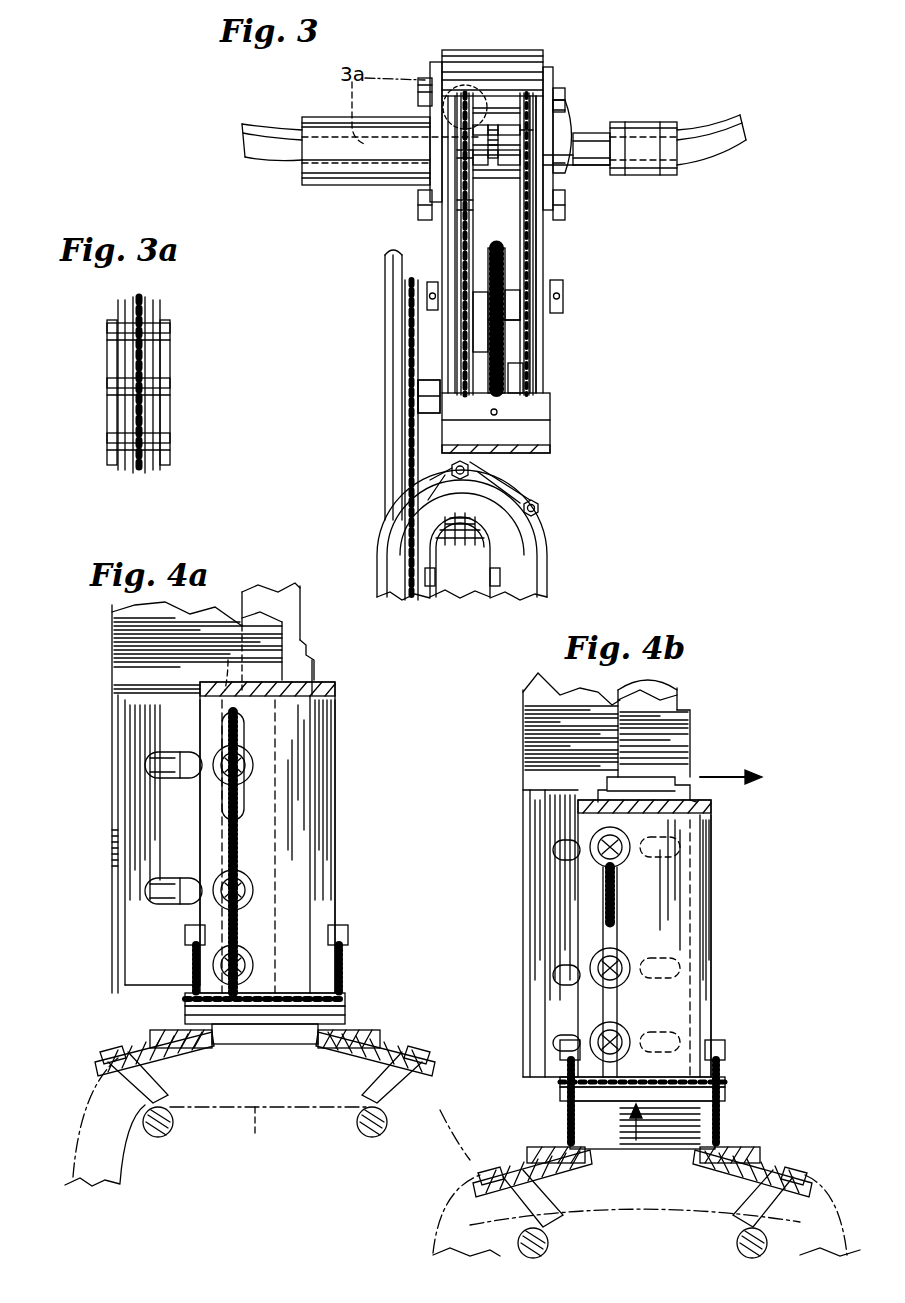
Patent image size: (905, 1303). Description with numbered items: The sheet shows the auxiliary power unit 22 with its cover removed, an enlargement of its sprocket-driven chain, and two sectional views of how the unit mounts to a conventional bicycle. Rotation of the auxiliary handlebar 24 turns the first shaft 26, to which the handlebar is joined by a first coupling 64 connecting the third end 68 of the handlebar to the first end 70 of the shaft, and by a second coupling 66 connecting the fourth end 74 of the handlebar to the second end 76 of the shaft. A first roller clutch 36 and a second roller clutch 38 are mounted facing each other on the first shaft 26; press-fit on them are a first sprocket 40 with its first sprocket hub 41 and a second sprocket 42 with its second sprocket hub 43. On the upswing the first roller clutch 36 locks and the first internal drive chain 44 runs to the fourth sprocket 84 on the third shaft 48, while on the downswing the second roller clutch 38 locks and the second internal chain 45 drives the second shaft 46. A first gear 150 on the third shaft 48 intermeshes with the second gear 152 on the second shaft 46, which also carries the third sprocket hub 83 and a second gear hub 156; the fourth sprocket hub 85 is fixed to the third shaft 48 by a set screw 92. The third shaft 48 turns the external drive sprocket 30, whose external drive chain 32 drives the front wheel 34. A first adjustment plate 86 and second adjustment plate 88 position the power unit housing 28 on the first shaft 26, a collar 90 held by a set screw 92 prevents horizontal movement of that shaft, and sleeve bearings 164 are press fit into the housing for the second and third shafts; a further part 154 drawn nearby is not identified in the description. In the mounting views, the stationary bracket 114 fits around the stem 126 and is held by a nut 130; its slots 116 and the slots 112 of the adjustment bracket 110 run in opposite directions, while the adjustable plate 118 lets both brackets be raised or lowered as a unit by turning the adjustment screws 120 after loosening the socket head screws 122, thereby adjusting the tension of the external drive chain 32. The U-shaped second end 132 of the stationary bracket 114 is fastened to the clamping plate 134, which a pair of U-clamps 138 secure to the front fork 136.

In FIG. 3, the auxiliary power unit 22 is at (572, 237).
In FIG. 3, the auxiliary handlebar 24 is at (700, 158).
In FIG. 3, the first shaft 26 is at (590, 135).
In FIG. 3, the auxiliary power unit housing 28 is at (550, 268).
In FIG. 4A, the auxiliary power unit housing 28 is at (125, 663).
In FIG. 4B, the auxiliary power unit housing 28 is at (525, 733).
In FIG. 3, the external drive sprocket 30 is at (398, 262).
In FIG. 3, the external drive chain 32 is at (410, 480).
In FIG. 3, the front wheel 34 is at (470, 585).
In FIG. 3, the first roller clutch 36 is at (440, 135).
In FIG. 3, the second roller clutch 38 is at (555, 118).
In FIG. 3, the first sprocket 40 is at (445, 165).
In FIG. 3A, the first sprocket 40 is at (140, 298).
In FIG. 3, the first sprocket hub 41 is at (468, 105).
In FIG. 3, the second sprocket 42 is at (530, 160).
In FIG. 3, the second sprocket hub 43 is at (492, 130).
In FIG. 3, the first internal drive chain 44 is at (440, 205).
In FIG. 3A, the first internal drive chain 44 is at (173, 352).
In FIG. 3, the second internal chain 45 is at (520, 130).
In FIG. 3, the second shaft 46 is at (462, 330).
In FIG. 3, the third shaft 48 is at (540, 400).
In FIG. 3, the first coupling 64 is at (325, 115).
In FIG. 3, the second coupling 66 is at (668, 125).
In FIG. 3, the third end 68 is at (340, 107).
In FIG. 3, the first end 70 is at (350, 181).
In FIG. 3, the fourth end 74 is at (678, 180).
In FIG. 3, the second end 76 is at (630, 180).
In FIG. 3, the third sprocket hub 83 is at (505, 300).
In FIG. 3, the fourth sprocket 84 is at (515, 452).
In FIG. 3, the fourth sprocket hub 85 is at (418, 395).
In FIG. 3, the first adjustment plate 86 is at (428, 78).
In FIG. 3, the second adjustment plate 88 is at (550, 72).
In FIG. 3, the collar 90 is at (585, 165).
In FIG. 3, the set screw 92 is at (560, 92).
In FIG. 4A, the adjustment bracket 110 is at (110, 745).
In FIG. 4B, the adjustment bracket 110 is at (522, 877).
In FIG. 4A, the slots 112 is at (175, 878).
In FIG. 4A, the stationary bracket 114 is at (335, 807).
In FIG. 4B, the stationary bracket 114 is at (578, 824).
In FIG. 4A, the slots 116 is at (245, 825).
In FIG. 4B, the slots 116 is at (615, 907).
In FIG. 4A, the adjustable plate 118 is at (330, 879).
In FIG. 4B, the adjustable plate 118 is at (712, 957).
In FIG. 4A, the adjustment screws 120 is at (185, 934).
In FIG. 4B, the adjustment screws 120 is at (565, 1049).
In FIG. 4A, the socket head screws 122 is at (248, 764).
In FIG. 4B, the socket head screws 122 is at (610, 944).
In FIG. 4A, the stem 126 is at (300, 642).
In FIG. 4B, the stem 126 is at (680, 697).
In FIG. 4A, the nut 130 is at (318, 672).
In FIG. 4B, the nut 130 is at (655, 790).
In FIG. 4A, the second end 132 is at (390, 1040).
In FIG. 4B, the second end 132 is at (765, 1150).
In FIG. 4A, the clamping plate 134 is at (100, 1062).
In FIG. 4B, the clamping plate 134 is at (808, 1180).
In FIG. 4A, the front fork 136 is at (255, 1110).
In FIG. 4B, the front fork 136 is at (665, 1218).
In FIG. 4A, the U-clamps 138 is at (175, 1118).
In FIG. 4B, the U-clamps 138 is at (505, 1200).
In FIG. 3, the first gear 150 is at (520, 375).
In FIG. 3, the second gear 152 is at (540, 325).
In FIG. 3, the bracket 154 is at (530, 385).
In FIG. 3, the second gear hub 156 is at (500, 315).
In FIG. 3, the sleeve bearings 164 is at (558, 292).